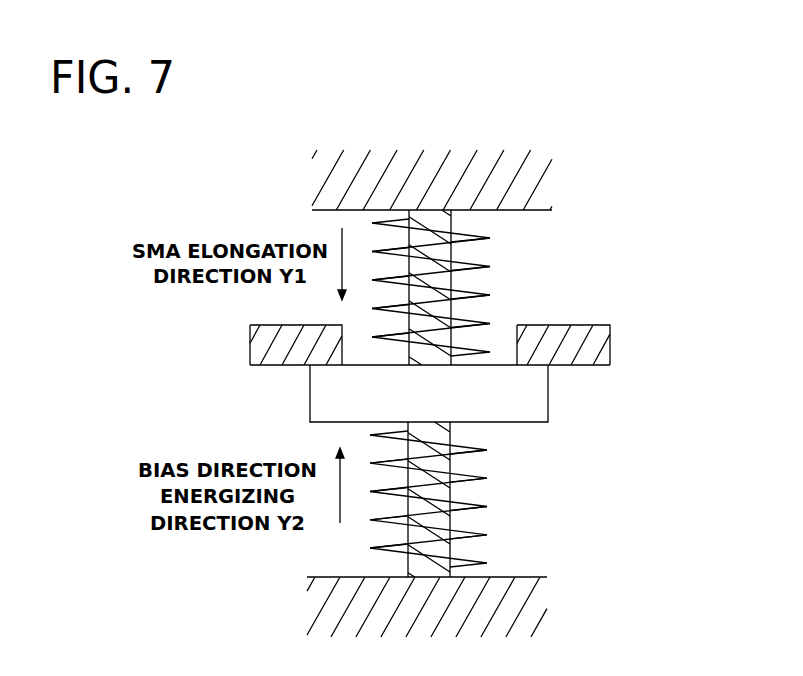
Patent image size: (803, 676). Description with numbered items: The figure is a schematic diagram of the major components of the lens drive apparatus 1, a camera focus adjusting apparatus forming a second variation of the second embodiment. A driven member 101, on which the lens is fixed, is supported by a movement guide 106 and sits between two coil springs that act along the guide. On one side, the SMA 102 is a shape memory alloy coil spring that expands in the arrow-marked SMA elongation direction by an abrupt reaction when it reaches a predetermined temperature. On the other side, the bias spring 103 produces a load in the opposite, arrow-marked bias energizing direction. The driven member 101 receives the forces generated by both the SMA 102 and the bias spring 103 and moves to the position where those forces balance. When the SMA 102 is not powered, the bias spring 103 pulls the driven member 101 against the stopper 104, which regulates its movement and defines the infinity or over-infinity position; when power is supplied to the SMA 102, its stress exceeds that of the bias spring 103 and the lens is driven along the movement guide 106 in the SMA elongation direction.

The lens drive apparatus 1 is at (439, 129).
The driven member 101 is at (548, 398).
The SMA 102 is at (490, 267).
The bias spring 103 is at (487, 507).
The stopper 104 is at (610, 345).
The movement guide 106 is at (452, 278).